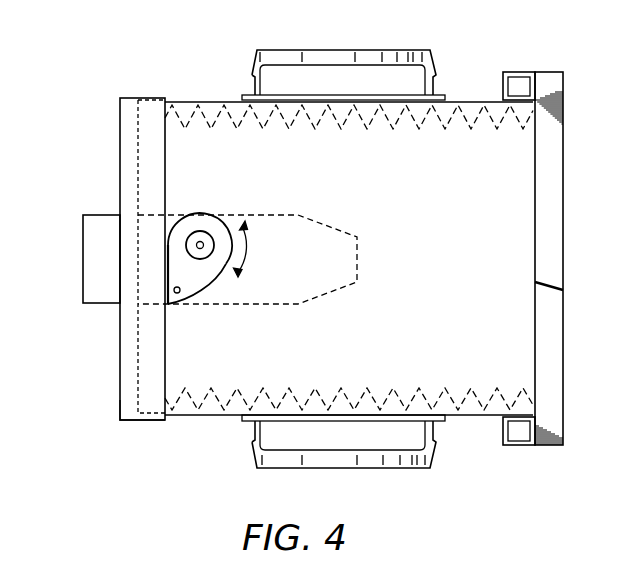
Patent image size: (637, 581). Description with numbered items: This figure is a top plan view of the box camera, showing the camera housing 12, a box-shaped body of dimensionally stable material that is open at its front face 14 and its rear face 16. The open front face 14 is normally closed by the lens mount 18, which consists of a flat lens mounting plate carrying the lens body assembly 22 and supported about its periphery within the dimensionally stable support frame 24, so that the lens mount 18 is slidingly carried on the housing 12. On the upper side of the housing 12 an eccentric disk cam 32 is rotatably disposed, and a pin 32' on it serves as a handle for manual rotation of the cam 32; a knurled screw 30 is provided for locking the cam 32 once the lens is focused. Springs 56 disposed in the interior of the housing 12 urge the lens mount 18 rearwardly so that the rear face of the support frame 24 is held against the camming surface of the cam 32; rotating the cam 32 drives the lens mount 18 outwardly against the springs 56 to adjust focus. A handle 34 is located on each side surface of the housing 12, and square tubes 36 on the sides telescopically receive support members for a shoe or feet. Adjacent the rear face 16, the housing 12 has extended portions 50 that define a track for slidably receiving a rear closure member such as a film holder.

The camera housing 12 is at (465, 294).
The front face 14 is at (150, 143).
The rear face 16 is at (567, 183).
The lens mount 18 is at (149, 93).
The lens body assembly 22 is at (83, 262).
The support frame 24 is at (120, 402).
The knurled screw 30 is at (213, 237).
The eccentric disk cam 32 is at (226, 274).
The pin 32' is at (200, 319).
The handle 34 is at (347, 50).
The square tube 36 is at (515, 72).
The extended portion 50 is at (567, 332).
The spring 56 is at (367, 128).